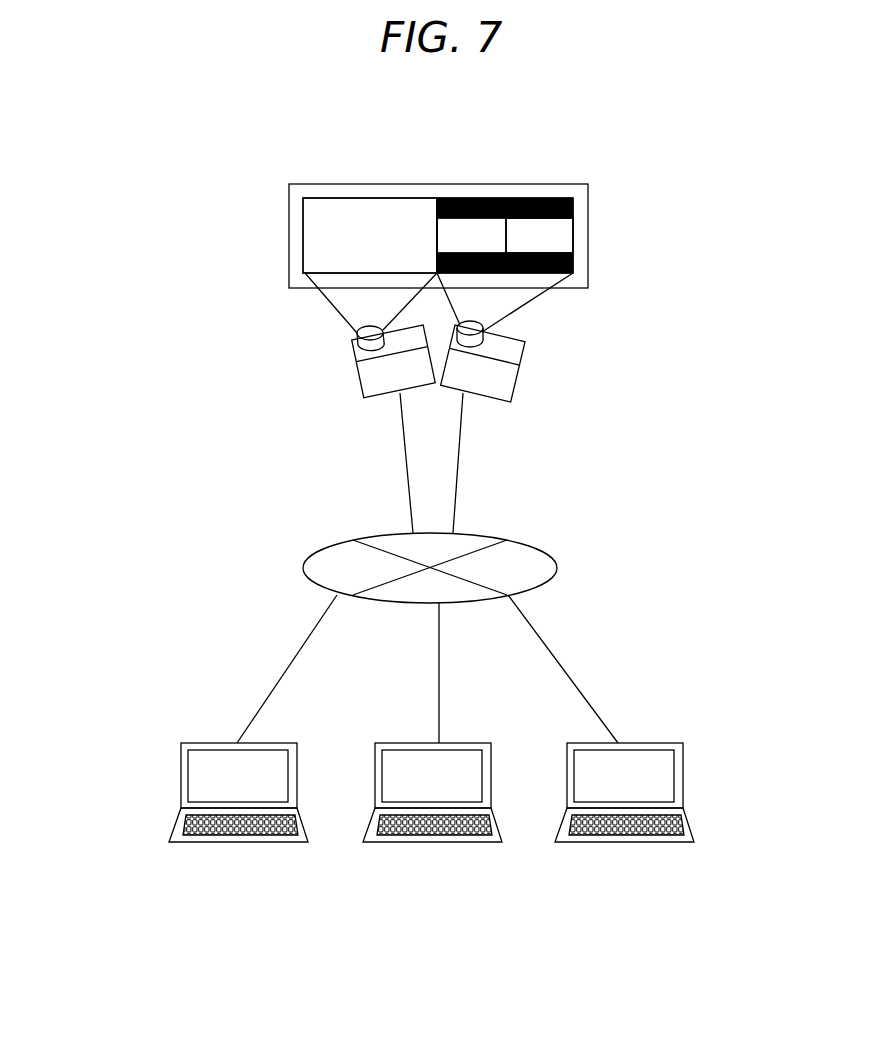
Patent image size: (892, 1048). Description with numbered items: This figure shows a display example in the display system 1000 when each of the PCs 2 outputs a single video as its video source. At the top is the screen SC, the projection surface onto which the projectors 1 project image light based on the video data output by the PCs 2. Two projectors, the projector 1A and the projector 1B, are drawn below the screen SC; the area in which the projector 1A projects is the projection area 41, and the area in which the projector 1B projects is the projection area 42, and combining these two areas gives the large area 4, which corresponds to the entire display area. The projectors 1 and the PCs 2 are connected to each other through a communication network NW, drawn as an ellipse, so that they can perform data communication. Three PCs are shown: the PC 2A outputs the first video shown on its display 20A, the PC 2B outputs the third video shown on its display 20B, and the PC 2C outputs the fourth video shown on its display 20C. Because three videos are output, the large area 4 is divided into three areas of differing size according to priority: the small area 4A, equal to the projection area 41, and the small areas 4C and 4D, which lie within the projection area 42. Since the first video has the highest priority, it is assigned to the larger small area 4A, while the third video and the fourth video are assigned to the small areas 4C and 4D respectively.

The display system 1000 is at (735, 166).
The screen SC is at (590, 265).
The large area 4 is at (523, 143).
The projection area 41 is at (398, 198).
The projection area 42 is at (502, 198).
The small area 4A is at (310, 215).
The small area 4C is at (441, 238).
The small area 4D is at (568, 222).
The projector 1 is at (440, 364).
The projector 1A is at (360, 383).
The projector 1B is at (517, 385).
The communication network NW is at (557, 567).
The PC 2 is at (435, 803).
The PC 2A is at (209, 771).
The PC 2B is at (380, 803).
The PC 2C is at (670, 771).
The display 20A is at (188, 780).
The display 20B is at (392, 785).
The display 20C is at (668, 782).